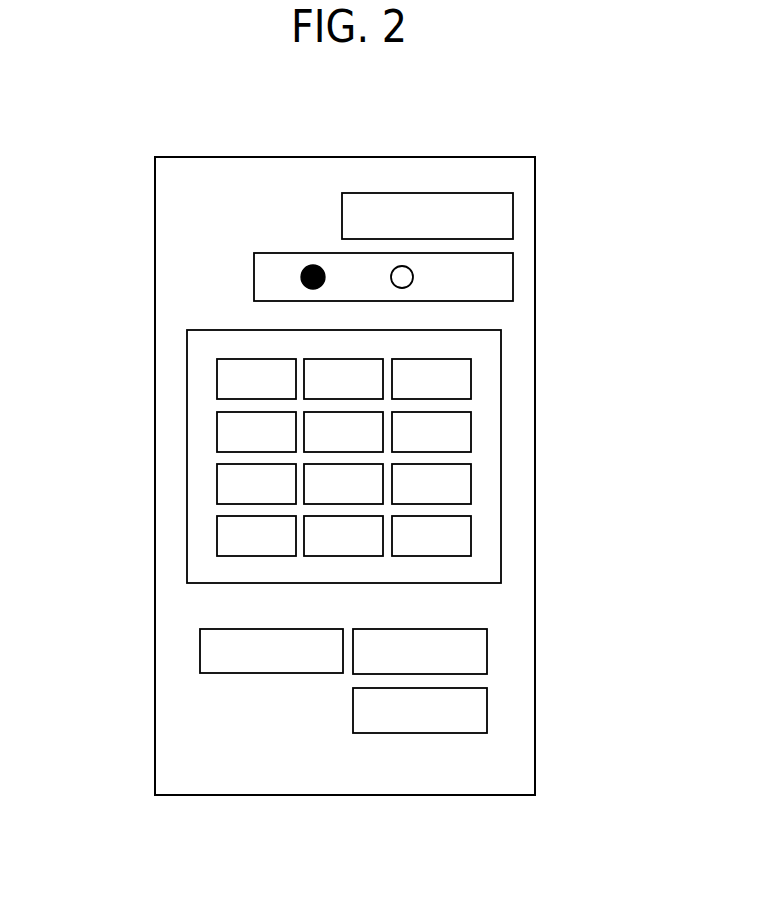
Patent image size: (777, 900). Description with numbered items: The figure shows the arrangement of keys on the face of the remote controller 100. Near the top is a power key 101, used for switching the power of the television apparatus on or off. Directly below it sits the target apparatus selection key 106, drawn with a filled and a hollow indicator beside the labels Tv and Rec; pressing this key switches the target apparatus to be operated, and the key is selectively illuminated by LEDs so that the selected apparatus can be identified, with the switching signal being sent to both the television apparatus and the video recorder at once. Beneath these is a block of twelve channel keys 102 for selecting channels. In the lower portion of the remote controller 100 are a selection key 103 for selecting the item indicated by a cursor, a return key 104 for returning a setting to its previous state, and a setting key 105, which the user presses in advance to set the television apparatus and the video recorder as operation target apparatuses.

The remote controller 100 is at (345, 796).
The power key 101 is at (513, 217).
The channel keys 102 is at (501, 428).
The selection key 103 is at (200, 654).
The return key 104 is at (487, 645).
The setting key 105 is at (487, 713).
The target apparatus selection key 106 is at (513, 282).